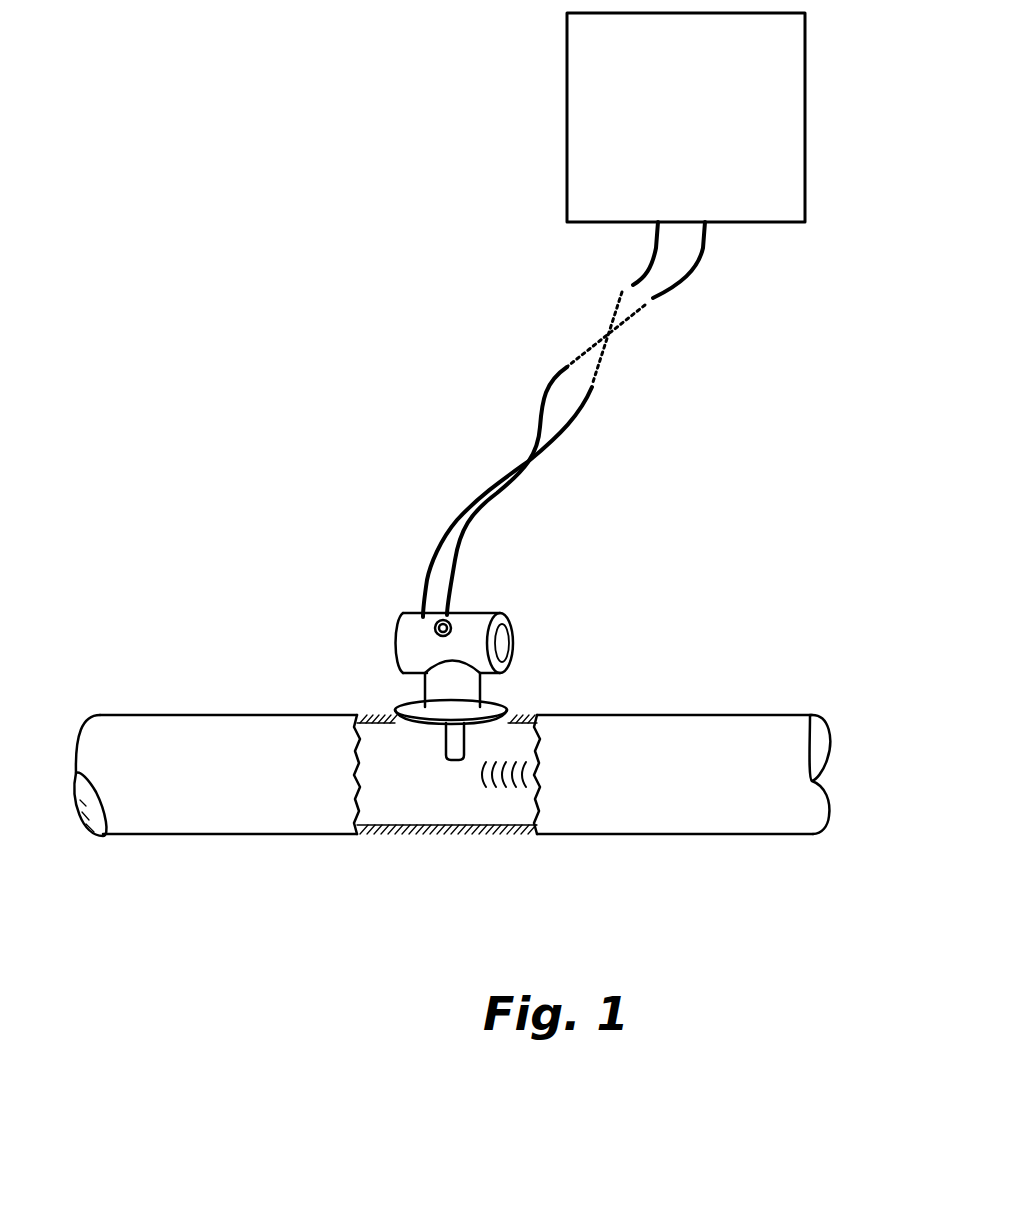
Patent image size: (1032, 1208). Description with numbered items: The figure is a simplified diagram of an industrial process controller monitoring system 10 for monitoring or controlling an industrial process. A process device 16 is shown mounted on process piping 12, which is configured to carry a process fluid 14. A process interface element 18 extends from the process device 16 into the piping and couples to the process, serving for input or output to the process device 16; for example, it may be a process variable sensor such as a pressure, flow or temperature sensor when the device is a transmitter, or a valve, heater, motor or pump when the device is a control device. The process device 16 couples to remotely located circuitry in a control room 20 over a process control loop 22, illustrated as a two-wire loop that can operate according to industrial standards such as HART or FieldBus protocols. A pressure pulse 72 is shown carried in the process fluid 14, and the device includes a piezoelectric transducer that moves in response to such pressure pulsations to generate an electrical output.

The industrial process controller monitoring system 10 is at (270, 276).
The process piping 12 is at (598, 714).
The process fluid 14 is at (714, 781).
The process device 16 is at (407, 627).
The process interface element 18 is at (447, 748).
The control room 20 is at (699, 177).
The process control loop 22 is at (530, 480).
The pressure pulse 72 is at (480, 780).